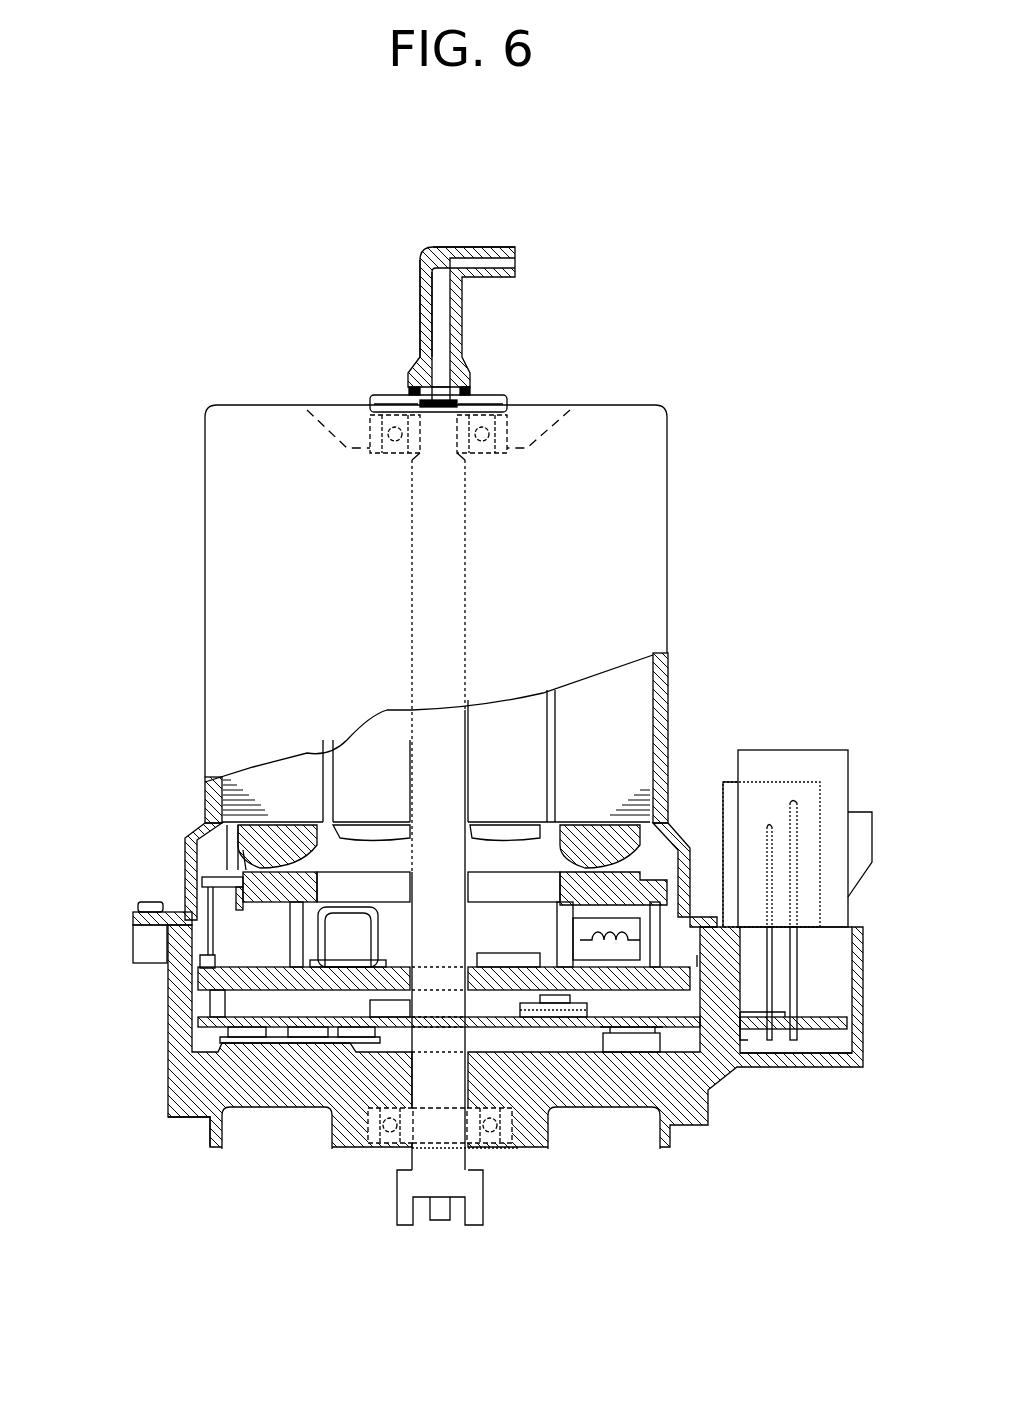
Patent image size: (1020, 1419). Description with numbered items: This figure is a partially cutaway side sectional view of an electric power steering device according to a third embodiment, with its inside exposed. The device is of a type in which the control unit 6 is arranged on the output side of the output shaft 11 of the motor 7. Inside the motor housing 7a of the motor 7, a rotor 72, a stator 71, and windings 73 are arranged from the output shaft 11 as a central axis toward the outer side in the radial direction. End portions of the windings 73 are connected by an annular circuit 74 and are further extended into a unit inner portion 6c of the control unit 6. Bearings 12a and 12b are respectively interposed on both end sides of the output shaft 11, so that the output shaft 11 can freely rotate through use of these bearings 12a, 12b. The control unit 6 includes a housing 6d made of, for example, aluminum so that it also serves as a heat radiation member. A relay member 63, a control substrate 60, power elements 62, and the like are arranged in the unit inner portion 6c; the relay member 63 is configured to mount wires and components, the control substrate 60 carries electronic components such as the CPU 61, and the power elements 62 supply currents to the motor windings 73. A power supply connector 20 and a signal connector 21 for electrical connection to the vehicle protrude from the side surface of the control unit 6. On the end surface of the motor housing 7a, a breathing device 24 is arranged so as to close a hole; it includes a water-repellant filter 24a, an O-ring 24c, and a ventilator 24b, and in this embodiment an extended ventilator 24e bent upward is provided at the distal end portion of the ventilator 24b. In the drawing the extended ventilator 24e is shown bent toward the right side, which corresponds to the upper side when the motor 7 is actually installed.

The control unit 6 is at (165, 1085).
The unit inner portion 6c is at (265, 930).
The housing 6d is at (175, 1118).
The motor 7 is at (205, 488).
The motor housing 7a is at (662, 660).
The output shaft 11 is at (430, 1223).
The bearing 12a is at (497, 1140).
The bearing 12b is at (385, 420).
The power supply connector 20 is at (820, 750).
The signal connector 21 is at (735, 780).
The breathing device 24 is at (530, 265).
The water-repellant filter 24a is at (432, 400).
The ventilator 24b is at (418, 307).
The O-ring 24c is at (470, 390).
The extended ventilator 24e is at (447, 247).
The control substrate 60 is at (550, 1110).
The CPU 61 is at (607, 1022).
The power elements 62 is at (293, 1030).
The relay member 63 is at (215, 972).
The stator 71 is at (257, 777).
The rotor 72 is at (350, 750).
The windings 73 is at (232, 830).
The annular circuit 74 is at (200, 882).